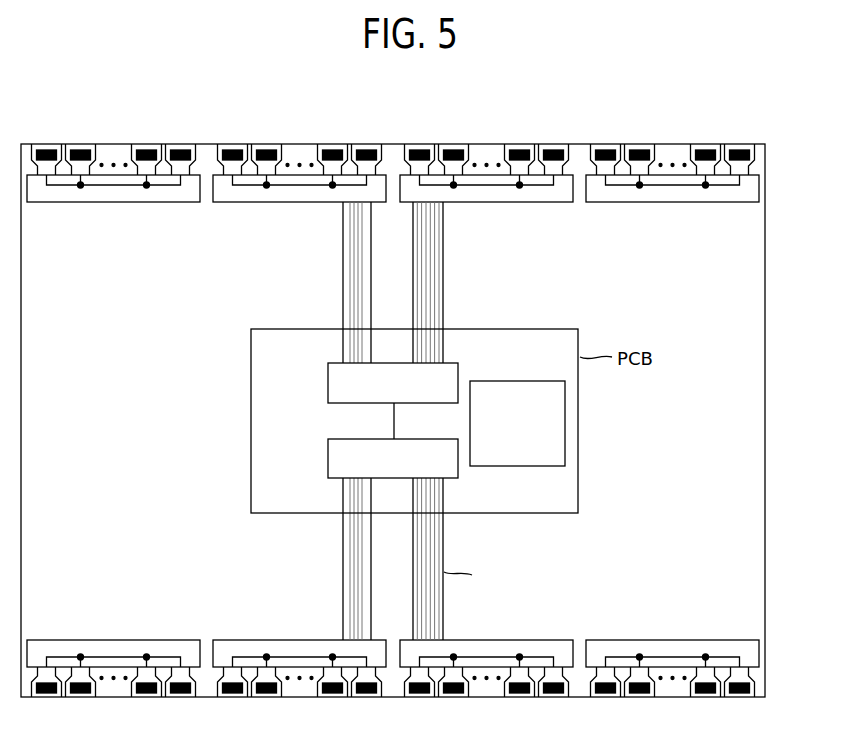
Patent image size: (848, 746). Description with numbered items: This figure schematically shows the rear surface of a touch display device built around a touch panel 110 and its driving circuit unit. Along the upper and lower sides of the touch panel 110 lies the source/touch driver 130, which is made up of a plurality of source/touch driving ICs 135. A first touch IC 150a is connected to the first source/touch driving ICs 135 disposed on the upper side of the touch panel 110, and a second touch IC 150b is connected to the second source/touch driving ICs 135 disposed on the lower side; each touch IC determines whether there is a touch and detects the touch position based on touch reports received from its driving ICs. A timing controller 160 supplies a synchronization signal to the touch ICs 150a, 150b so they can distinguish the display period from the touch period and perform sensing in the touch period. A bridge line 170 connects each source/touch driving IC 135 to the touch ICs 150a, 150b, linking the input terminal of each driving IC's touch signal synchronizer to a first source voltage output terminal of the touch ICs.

The touch panel 110 is at (108, 257).
The source/touch driver 130 is at (258, 210).
The source/touch driving IC 135 is at (747, 167).
The first touch IC 150a is at (328, 385).
The second touch IC 150b is at (328, 460).
The timing controller 160 is at (517, 381).
The bridge line 170 is at (490, 202).